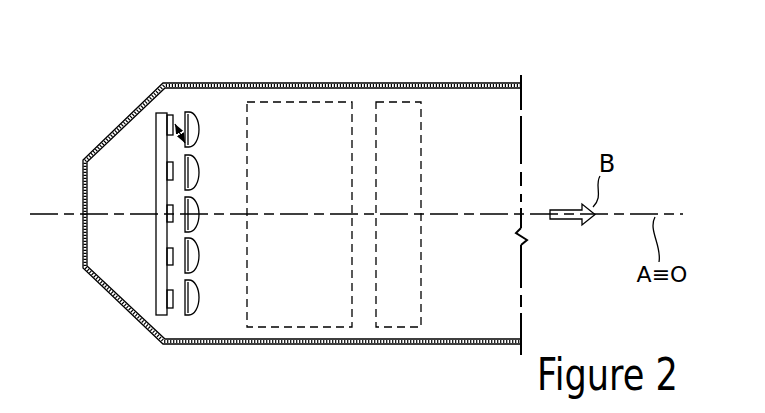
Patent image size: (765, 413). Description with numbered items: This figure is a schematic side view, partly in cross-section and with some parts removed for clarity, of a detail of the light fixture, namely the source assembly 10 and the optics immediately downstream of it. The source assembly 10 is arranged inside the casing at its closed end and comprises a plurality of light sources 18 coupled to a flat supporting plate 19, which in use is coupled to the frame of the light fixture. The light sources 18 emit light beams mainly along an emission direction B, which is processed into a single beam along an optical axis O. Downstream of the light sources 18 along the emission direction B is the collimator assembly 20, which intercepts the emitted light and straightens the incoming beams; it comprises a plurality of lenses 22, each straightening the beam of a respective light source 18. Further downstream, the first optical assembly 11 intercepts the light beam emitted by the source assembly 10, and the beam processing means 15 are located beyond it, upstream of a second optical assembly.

The source assembly 10 is at (141, 165).
The first optical assembly 11 is at (353, 320).
The beam processing means 15 is at (422, 119).
The light sources 18 is at (157, 200).
The supporting plate 19 is at (155, 307).
The collimator assembly 20 is at (193, 325).
The lenses 22 is at (197, 207).